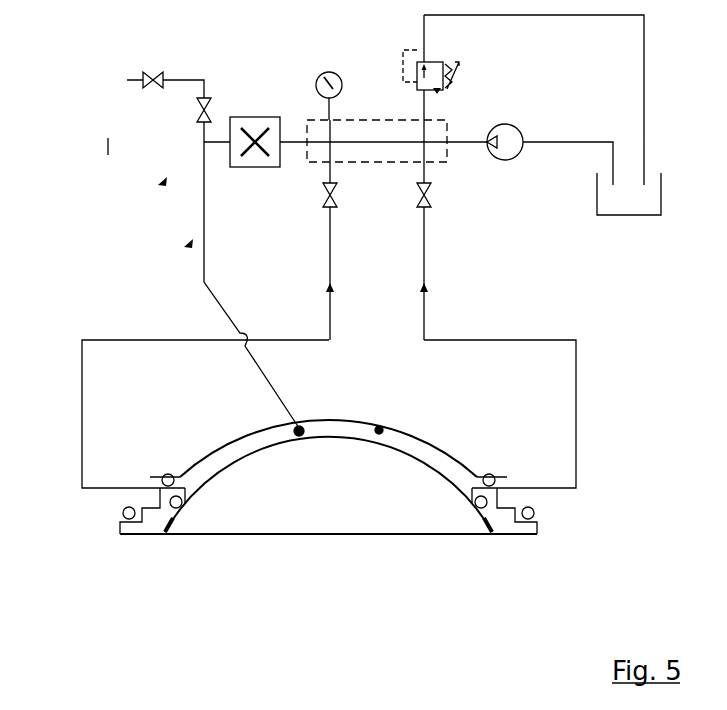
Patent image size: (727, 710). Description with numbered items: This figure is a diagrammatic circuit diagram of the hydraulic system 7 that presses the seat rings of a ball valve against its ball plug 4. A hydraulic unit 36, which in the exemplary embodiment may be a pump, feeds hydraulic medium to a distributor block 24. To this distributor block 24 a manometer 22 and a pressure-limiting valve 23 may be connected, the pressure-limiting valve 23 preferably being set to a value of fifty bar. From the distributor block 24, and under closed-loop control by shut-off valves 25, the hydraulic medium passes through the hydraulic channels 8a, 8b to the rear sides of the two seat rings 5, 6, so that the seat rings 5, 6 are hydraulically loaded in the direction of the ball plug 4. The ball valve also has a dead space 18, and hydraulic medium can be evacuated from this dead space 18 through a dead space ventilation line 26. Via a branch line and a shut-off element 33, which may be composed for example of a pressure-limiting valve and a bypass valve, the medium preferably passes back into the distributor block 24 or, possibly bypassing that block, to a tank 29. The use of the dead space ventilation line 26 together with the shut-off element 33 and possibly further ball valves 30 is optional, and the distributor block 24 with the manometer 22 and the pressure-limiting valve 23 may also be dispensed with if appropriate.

The ball plug 4 is at (352, 538).
The seat ring 5 is at (522, 539).
The seat ring 6 is at (145, 539).
The hydraulic system 7 is at (115, 94).
The hydraulic channel 8a is at (447, 230).
The hydraulic channel 8b is at (354, 230).
The dead space 18 is at (379, 430).
The manometer 22 is at (324, 68).
The pressure-limiting valve 23 is at (441, 67).
The distributor block 24 is at (449, 164).
The shut-off valves 25 is at (416, 199).
The dead space ventilation line 26 is at (203, 275).
The tank 29 is at (650, 194).
The ball valve 30 is at (194, 96).
The shut-off element 33 is at (258, 112).
The hydraulic unit 36 is at (521, 129).